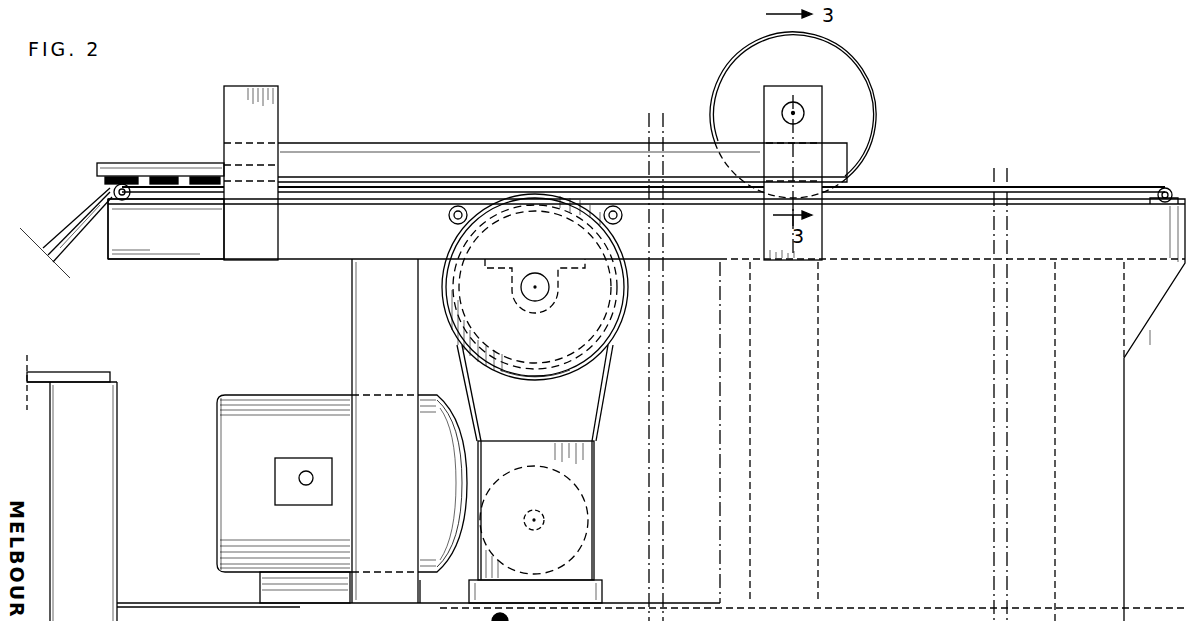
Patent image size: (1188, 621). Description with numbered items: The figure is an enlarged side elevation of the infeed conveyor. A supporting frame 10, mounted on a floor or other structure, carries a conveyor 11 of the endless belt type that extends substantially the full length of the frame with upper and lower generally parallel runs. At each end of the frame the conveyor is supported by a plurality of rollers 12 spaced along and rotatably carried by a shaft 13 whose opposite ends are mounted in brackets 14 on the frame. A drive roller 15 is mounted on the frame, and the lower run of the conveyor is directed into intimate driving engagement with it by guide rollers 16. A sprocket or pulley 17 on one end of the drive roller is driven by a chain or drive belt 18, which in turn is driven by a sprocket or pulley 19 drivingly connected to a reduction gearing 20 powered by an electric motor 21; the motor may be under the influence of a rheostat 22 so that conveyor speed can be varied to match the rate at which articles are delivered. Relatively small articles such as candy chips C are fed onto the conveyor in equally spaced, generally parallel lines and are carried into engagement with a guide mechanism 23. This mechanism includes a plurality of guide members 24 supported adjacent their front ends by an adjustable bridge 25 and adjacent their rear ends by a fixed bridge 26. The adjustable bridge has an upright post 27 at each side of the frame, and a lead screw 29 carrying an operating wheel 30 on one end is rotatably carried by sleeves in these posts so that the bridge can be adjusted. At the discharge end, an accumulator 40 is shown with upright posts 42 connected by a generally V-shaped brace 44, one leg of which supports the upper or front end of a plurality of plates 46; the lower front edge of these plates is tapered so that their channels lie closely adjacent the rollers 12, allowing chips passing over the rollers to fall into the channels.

The supporting frame 10 is at (286, 265).
The conveyor 11 is at (423, 190).
The rollers 12 is at (135, 203).
The shaft 13 is at (124, 186).
The brackets 14 is at (1158, 194).
The drive roller 15 is at (462, 316).
The guide rollers 16 is at (449, 218).
The sprocket or pulley 17 is at (535, 366).
The chain or drive belt 18 is at (600, 411).
The sprocket or pulley 19 is at (597, 468).
The reduction gearing 20 is at (522, 448).
The electric motor 21 is at (292, 405).
The rheostat 22 is at (288, 490).
The guide mechanism 23 is at (574, 143).
The guide members 24 is at (510, 150).
The adjustable bridge 25 is at (830, 84).
The fixed bridge 26 is at (261, 80).
The upright post 27 is at (808, 122).
The lead screw 29 is at (793, 125).
The operating wheel 30 is at (730, 78).
The accumulator 40 is at (57, 232).
The upright posts 42 is at (107, 467).
The V-shaped brace 44 is at (36, 378).
The plates 46 is at (78, 243).
The candy chips C is at (204, 168).